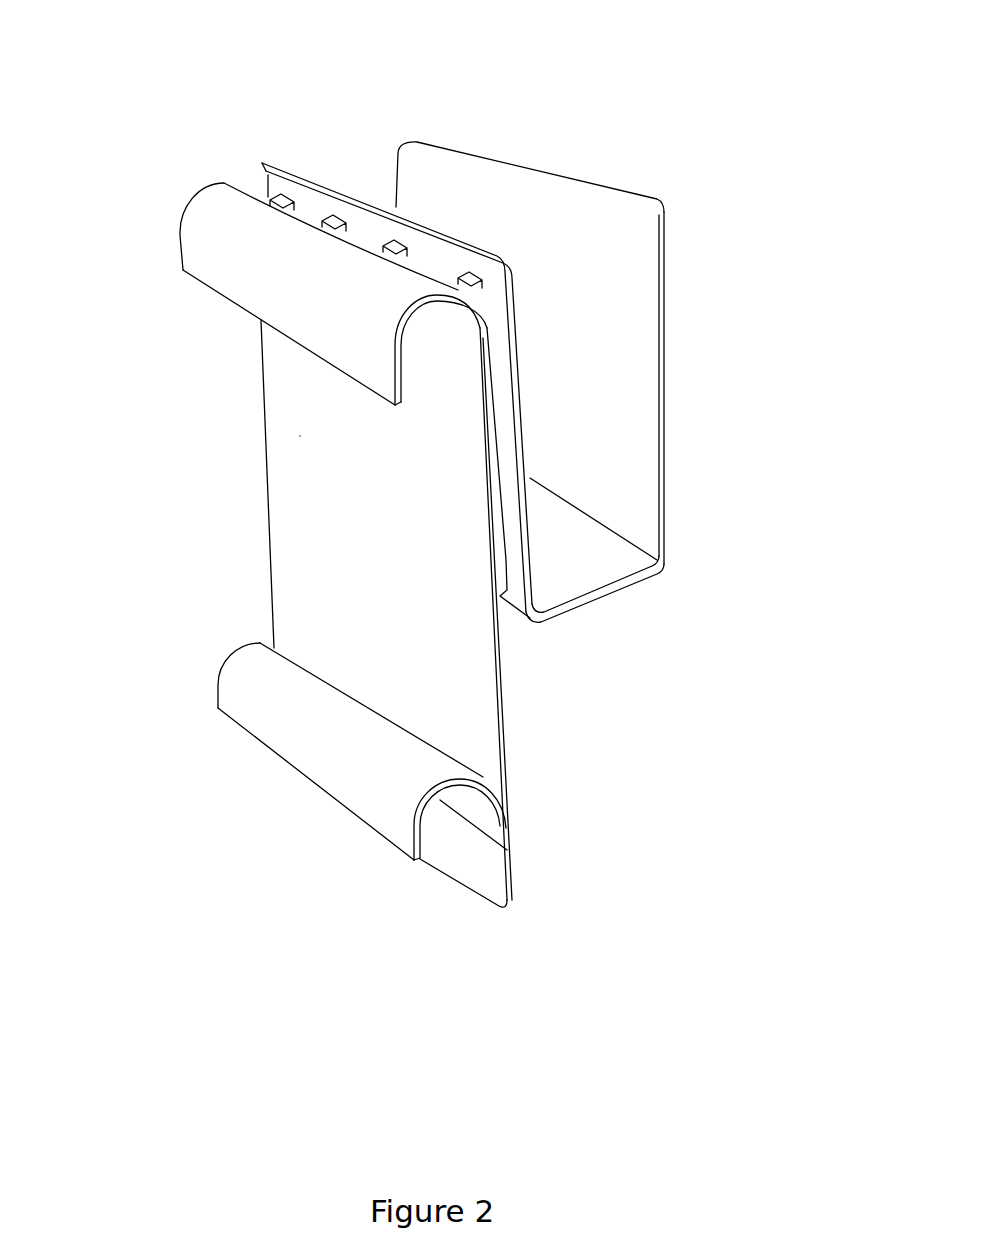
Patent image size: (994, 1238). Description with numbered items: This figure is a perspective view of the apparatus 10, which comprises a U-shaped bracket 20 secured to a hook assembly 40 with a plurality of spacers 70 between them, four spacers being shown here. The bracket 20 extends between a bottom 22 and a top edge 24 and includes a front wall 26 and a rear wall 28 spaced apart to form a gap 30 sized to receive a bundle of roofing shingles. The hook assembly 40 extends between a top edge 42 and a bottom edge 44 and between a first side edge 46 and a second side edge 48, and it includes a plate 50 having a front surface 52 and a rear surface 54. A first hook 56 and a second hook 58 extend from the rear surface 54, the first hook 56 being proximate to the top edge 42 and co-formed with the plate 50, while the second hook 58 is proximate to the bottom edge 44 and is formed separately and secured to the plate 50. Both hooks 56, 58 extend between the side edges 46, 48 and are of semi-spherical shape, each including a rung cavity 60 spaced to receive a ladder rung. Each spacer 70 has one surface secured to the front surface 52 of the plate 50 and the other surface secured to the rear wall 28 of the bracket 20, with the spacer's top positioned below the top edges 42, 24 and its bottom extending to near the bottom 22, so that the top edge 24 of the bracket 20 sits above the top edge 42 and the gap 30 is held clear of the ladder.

The apparatus 10 is at (688, 78).
The U-shaped bracket 20 is at (666, 407).
The bottom 22 is at (665, 569).
The top edge 24 is at (642, 193).
The front wall 26 is at (666, 330).
The rear wall 28 is at (354, 198).
The gap 30 is at (480, 188).
The hook assembly 40 is at (267, 483).
The top edge 42 is at (195, 192).
The bottom edge 44 is at (457, 873).
The first side edge 46 is at (270, 580).
The second side edge 48 is at (506, 713).
The plate 50 is at (468, 678).
The front surface 52 is at (515, 767).
The rear surface 54 is at (300, 436).
The first hook 56 is at (181, 248).
The second hook 58 is at (218, 686).
The rung cavities 60 is at (433, 358).
The spacers 70 is at (337, 222).